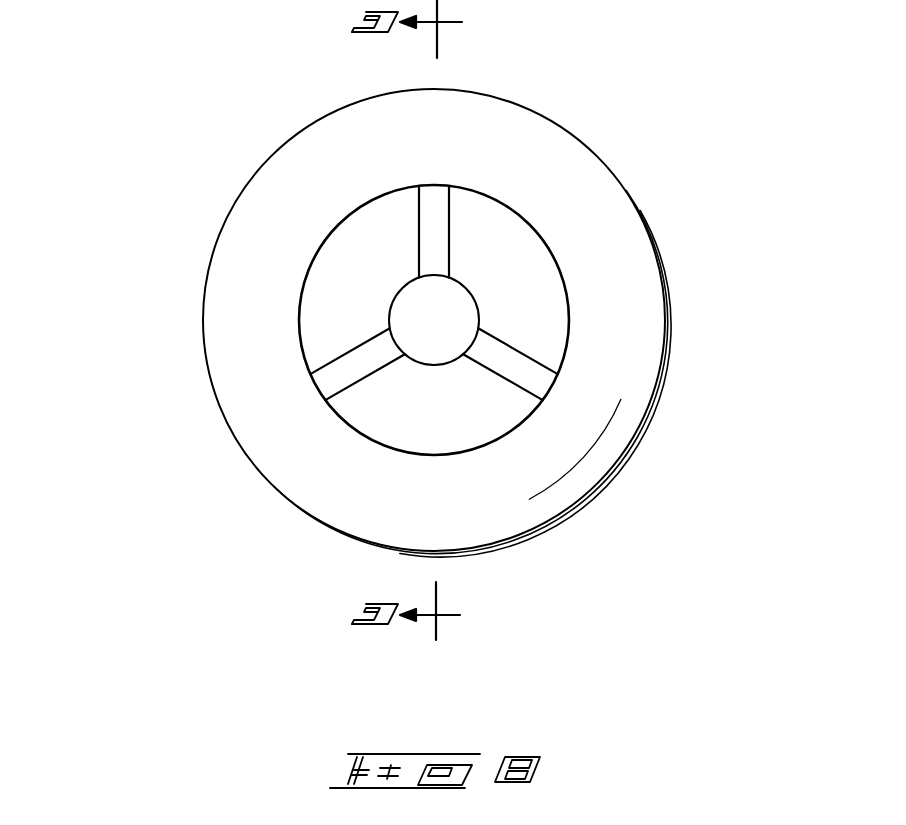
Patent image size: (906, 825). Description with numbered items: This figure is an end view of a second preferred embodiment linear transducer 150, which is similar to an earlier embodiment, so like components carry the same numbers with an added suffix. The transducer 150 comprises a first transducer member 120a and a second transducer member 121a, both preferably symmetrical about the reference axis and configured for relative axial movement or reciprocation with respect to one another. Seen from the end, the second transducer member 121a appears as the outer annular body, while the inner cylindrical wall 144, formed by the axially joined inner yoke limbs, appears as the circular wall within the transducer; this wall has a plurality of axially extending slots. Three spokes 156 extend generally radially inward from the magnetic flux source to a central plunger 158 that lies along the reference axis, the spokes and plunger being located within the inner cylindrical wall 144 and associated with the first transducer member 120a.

The linear transducer 150 is at (205, 127).
The second transducer member 121a is at (640, 170).
The inner cylindrical wall 144 is at (533, 232).
The first transducer member 120a is at (392, 284).
The spokes 156 is at (435, 227).
The central plunger 158 is at (445, 340).